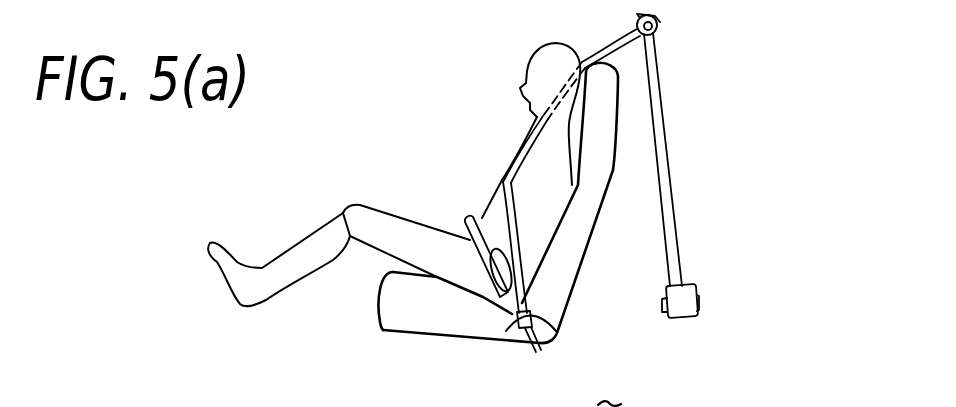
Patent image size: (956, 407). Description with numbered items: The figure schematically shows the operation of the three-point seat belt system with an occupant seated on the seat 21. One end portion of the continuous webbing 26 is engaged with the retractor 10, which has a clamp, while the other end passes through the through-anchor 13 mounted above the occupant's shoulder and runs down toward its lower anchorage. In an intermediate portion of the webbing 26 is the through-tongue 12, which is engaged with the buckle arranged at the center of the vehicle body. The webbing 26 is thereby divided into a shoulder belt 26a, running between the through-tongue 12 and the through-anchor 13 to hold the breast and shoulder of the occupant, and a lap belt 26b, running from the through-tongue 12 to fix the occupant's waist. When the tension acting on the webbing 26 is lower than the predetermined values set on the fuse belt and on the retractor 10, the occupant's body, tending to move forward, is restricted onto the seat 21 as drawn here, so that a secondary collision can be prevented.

The retractor 10 is at (692, 288).
The through-tongue 12 is at (500, 337).
The through-anchor 13 is at (656, 29).
The seat 21 is at (617, 131).
The continuous webbing 26 is at (524, 208).
The shoulder belt 26a is at (508, 172).
The lap belt 26b is at (470, 216).